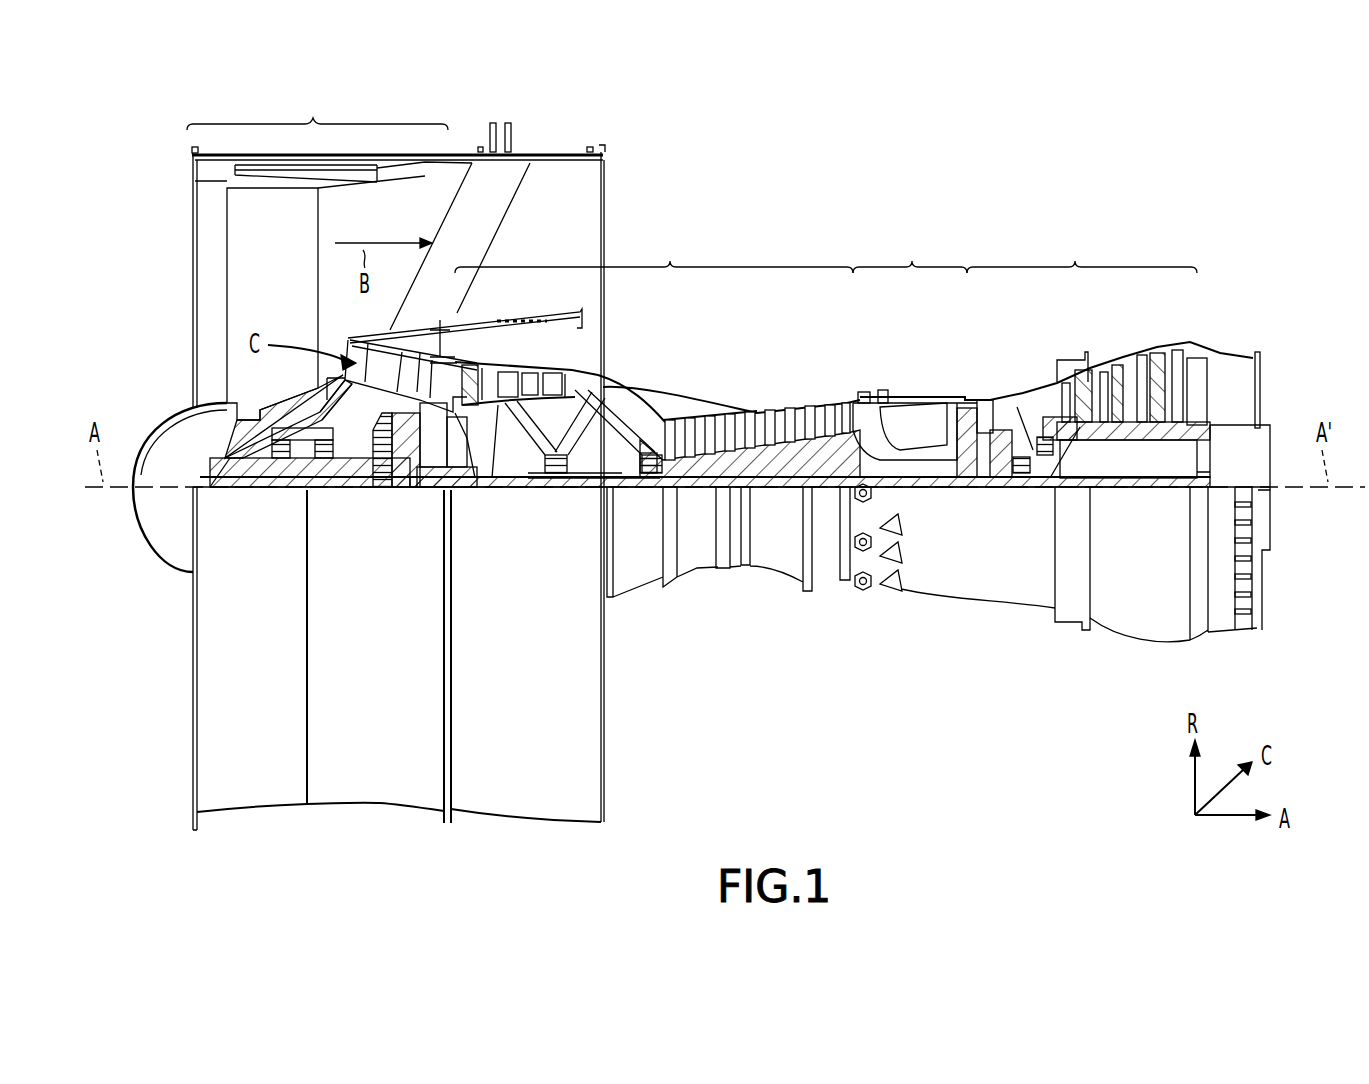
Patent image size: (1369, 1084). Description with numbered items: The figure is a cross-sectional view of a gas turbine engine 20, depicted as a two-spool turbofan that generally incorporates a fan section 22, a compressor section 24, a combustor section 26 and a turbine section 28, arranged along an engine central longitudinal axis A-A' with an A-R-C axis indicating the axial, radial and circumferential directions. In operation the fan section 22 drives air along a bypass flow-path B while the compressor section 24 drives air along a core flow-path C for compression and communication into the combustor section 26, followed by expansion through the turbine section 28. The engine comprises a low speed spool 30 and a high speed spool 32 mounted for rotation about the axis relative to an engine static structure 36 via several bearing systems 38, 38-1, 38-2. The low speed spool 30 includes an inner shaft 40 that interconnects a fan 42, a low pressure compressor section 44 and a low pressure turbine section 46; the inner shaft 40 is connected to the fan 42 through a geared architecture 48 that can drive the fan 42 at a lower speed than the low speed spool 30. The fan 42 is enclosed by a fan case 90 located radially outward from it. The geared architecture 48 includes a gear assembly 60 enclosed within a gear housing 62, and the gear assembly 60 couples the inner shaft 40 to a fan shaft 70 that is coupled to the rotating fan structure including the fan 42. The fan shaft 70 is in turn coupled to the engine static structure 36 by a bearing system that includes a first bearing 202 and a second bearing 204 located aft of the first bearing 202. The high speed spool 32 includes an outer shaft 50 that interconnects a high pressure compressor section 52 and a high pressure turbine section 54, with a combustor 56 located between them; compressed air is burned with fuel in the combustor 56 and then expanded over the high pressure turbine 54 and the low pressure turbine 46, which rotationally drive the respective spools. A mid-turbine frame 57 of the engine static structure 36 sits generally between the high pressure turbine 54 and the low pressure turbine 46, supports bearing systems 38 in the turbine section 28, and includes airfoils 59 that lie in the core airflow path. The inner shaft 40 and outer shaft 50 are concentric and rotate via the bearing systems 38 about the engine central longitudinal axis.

The gas turbine engine 20 is at (966, 188).
The fan section 22 is at (317, 107).
The compressor section 24 is at (654, 250).
The combustor section 26 is at (910, 250).
The turbine section 28 is at (1082, 250).
The low speed spool 30 is at (784, 514).
The high speed spool 32 is at (827, 453).
The engine static structure 36 is at (368, 790).
The bearing system 38 is at (1033, 487).
The bearing system 38-1 is at (280, 458).
The bearing system 38-2 is at (553, 485).
The inner shaft 40 is at (627, 490).
The fan 42 is at (279, 291).
The low pressure compressor section 44 is at (530, 380).
The low pressure turbine section 46 is at (1123, 367).
The geared architecture 48 is at (408, 506).
The outer shaft 50 is at (905, 470).
The high pressure compressor section 52 is at (763, 453).
The high pressure turbine section 54 is at (985, 398).
The combustor 56 is at (907, 425).
The mid-turbine frame 57 is at (1018, 392).
The airfoils 59 is at (1040, 407).
The gear assembly 60 is at (413, 465).
The gear housing 62 is at (412, 427).
The fan shaft 70 is at (325, 480).
The fan case 90 is at (218, 181).
The first bearing 202 is at (283, 458).
The second bearing 204 is at (337, 450).